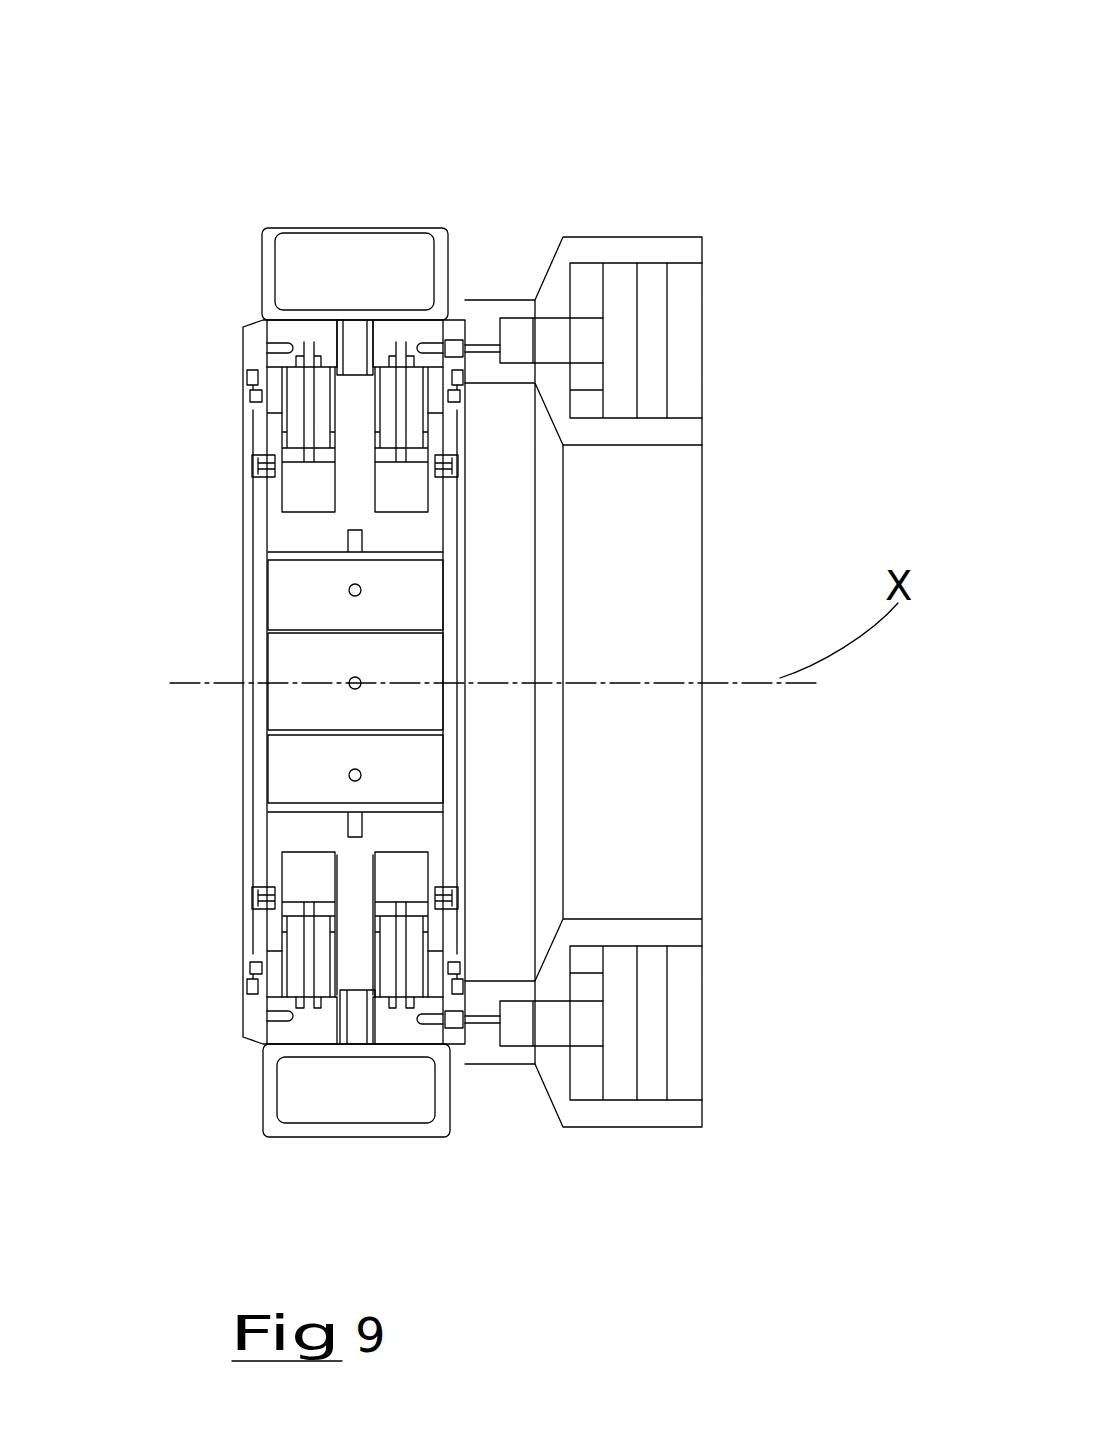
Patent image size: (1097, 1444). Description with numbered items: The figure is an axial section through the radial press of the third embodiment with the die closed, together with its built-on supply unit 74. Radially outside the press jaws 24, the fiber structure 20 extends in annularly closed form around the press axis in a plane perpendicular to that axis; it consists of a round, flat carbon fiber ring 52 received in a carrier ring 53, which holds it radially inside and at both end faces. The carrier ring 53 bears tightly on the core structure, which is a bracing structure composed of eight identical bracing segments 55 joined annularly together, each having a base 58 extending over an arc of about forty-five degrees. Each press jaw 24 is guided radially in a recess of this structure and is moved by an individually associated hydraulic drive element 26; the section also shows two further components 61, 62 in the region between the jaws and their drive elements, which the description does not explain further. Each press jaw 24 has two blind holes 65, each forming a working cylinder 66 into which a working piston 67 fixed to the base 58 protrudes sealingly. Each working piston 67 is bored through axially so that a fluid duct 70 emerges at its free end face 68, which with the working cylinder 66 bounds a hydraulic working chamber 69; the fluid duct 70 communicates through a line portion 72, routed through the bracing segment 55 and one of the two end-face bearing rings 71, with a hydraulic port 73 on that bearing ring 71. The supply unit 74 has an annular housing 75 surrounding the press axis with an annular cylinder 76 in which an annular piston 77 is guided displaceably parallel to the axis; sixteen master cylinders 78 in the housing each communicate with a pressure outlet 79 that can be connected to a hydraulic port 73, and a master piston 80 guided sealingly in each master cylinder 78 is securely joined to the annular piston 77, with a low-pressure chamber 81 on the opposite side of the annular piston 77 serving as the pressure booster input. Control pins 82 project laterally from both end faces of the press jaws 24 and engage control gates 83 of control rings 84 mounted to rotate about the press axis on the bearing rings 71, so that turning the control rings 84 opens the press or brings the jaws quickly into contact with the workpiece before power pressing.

The fiber structure 20 is at (413, 157).
The press jaw 24 is at (288, 578).
The hydraulic drive element 26 is at (449, 930).
The carbon fiber ring 52 is at (358, 232).
The carrier ring 53 is at (268, 300).
The bracing segment 55 is at (252, 1030).
The base 58 is at (325, 1028).
The center block 61 is at (362, 1022).
The piston gap spacer 62 is at (358, 957).
The blind hole 65 is at (430, 877).
The working cylinder 66 is at (288, 886).
The working piston 67 is at (253, 962).
The free end face 68 is at (330, 873).
The hydraulic working chamber 69 is at (408, 868).
The fluid duct 70 is at (310, 980).
The bearing ring 71 is at (448, 317).
The line portion 72 is at (437, 1020).
The hydraulic port 73 is at (470, 1063).
The supply unit 74 is at (757, 205).
The annular housing 75 is at (578, 245).
The annular cylinder 76 is at (597, 1097).
The annular piston 77 is at (623, 307).
The master cylinder 78 is at (517, 337).
The pressure outlet 79 is at (487, 337).
The master piston 80 is at (567, 1027).
The low-pressure chamber 81 is at (680, 328).
The control pin 82 is at (260, 458).
The control gate 83 is at (247, 483).
The control ring 84 is at (253, 420).